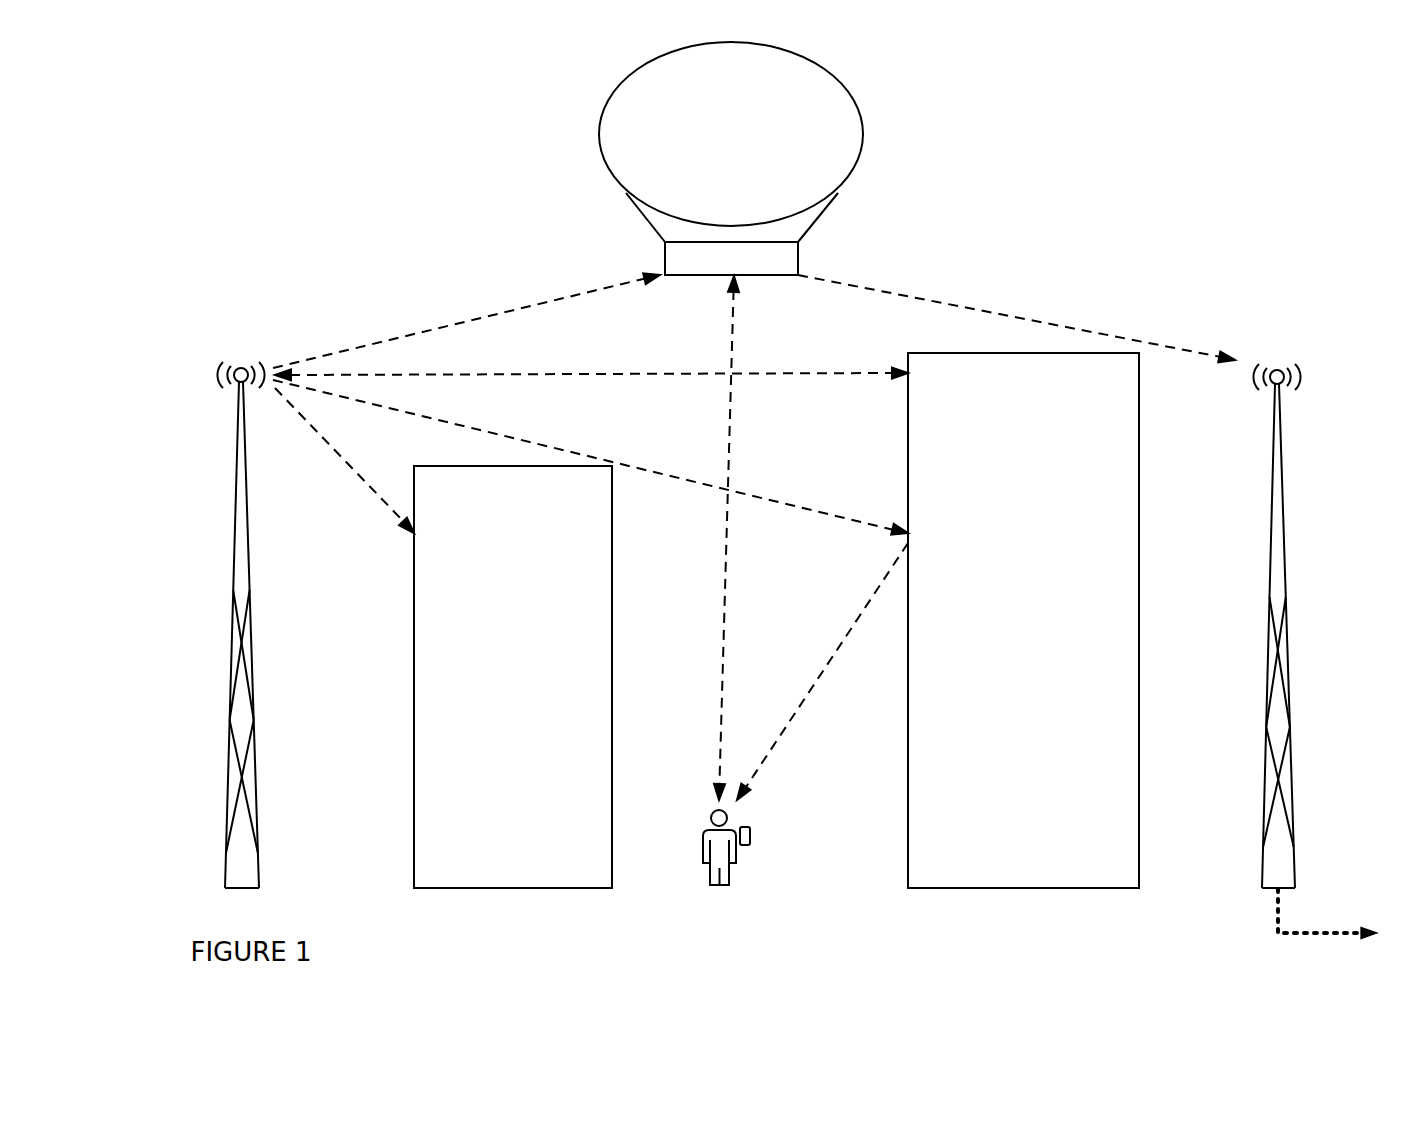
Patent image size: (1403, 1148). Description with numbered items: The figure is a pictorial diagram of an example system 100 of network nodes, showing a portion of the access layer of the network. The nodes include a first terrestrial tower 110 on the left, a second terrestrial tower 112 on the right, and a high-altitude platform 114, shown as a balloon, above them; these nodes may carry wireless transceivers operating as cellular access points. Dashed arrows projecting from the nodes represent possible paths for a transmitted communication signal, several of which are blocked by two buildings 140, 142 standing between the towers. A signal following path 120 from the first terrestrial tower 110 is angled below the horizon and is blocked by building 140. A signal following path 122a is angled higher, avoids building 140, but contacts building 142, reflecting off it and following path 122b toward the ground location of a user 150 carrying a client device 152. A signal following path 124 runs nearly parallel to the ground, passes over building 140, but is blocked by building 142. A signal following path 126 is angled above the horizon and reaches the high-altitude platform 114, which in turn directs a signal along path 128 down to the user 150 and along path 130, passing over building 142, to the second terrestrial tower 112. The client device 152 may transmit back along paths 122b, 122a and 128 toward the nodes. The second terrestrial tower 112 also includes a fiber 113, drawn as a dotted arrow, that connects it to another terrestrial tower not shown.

The system 100 is at (236, 925).
The first terrestrial tower 110 is at (240, 593).
The second terrestrial tower 112 is at (1276, 592).
The fiber 113 is at (1327, 927).
The high-altitude platform 114 is at (713, 139).
The path 120 is at (344, 460).
The path 122a is at (590, 457).
The path 122b is at (822, 671).
The path 124 is at (591, 361).
The path 126 is at (466, 320).
The path 128 is at (711, 538).
The path 130 is at (1016, 318).
The building 140 is at (495, 694).
The building 142 is at (998, 628).
The user 150 is at (732, 865).
The client device 152 is at (767, 838).